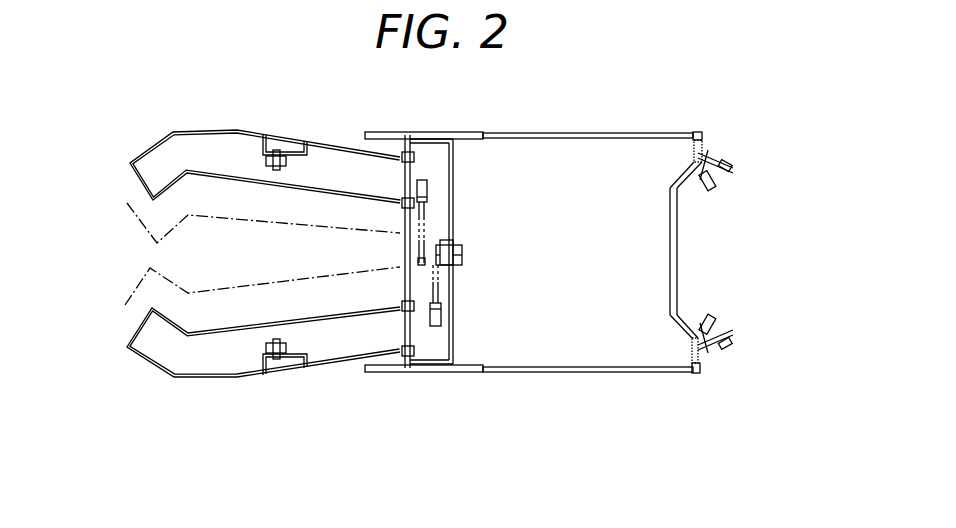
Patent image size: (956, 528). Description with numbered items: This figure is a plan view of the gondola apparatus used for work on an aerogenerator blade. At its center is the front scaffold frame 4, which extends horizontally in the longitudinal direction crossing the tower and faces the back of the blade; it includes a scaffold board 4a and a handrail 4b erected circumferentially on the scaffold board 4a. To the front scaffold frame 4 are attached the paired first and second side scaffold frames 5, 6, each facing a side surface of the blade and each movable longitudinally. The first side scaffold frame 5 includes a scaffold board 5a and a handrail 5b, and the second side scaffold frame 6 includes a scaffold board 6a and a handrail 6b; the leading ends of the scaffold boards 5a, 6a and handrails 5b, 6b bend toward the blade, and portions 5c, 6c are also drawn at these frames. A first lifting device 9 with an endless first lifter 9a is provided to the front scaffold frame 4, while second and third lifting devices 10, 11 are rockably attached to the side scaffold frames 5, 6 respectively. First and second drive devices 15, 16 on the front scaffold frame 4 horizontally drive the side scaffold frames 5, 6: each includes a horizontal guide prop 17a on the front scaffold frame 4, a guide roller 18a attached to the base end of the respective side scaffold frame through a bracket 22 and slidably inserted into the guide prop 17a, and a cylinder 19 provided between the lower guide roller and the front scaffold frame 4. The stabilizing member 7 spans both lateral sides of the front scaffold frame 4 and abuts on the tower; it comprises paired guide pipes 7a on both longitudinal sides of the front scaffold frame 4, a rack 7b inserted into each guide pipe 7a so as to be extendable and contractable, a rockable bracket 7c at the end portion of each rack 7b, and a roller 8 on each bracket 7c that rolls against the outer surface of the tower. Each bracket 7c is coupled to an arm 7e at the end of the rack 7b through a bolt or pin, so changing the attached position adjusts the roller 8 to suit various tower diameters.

The front scaffold frame 4 is at (461, 165).
The scaffold board 4a is at (438, 340).
The handrail 4b is at (450, 315).
The first side scaffold frame 5 is at (193, 122).
The scaffold board 5a is at (168, 148).
The handrail 5b is at (243, 130).
The arm bracket 5c is at (270, 138).
The second side scaffold frame 6 is at (190, 385).
The scaffold board 6a is at (168, 357).
The handrail 6b is at (240, 377).
The arm bracket 6c is at (265, 365).
The stabilizing member 7 is at (552, 378).
The guide pipe 7a is at (465, 132).
The rack 7b is at (613, 133).
The rockable bracket 7c is at (720, 163).
The arm 7e is at (678, 270).
The roller 8 is at (718, 194).
The first lifting device 9 is at (463, 238).
The first lifter 9a is at (463, 257).
The second lifting device 10 is at (275, 173).
The third lifting device 11 is at (273, 336).
The first drive device 15 is at (444, 287).
The second drive device 16 is at (432, 218).
The horizontal guide prop 17a is at (400, 253).
The guide roller 18a is at (403, 155).
The cylinder 19 is at (410, 227).
The bracket 22 is at (400, 147).